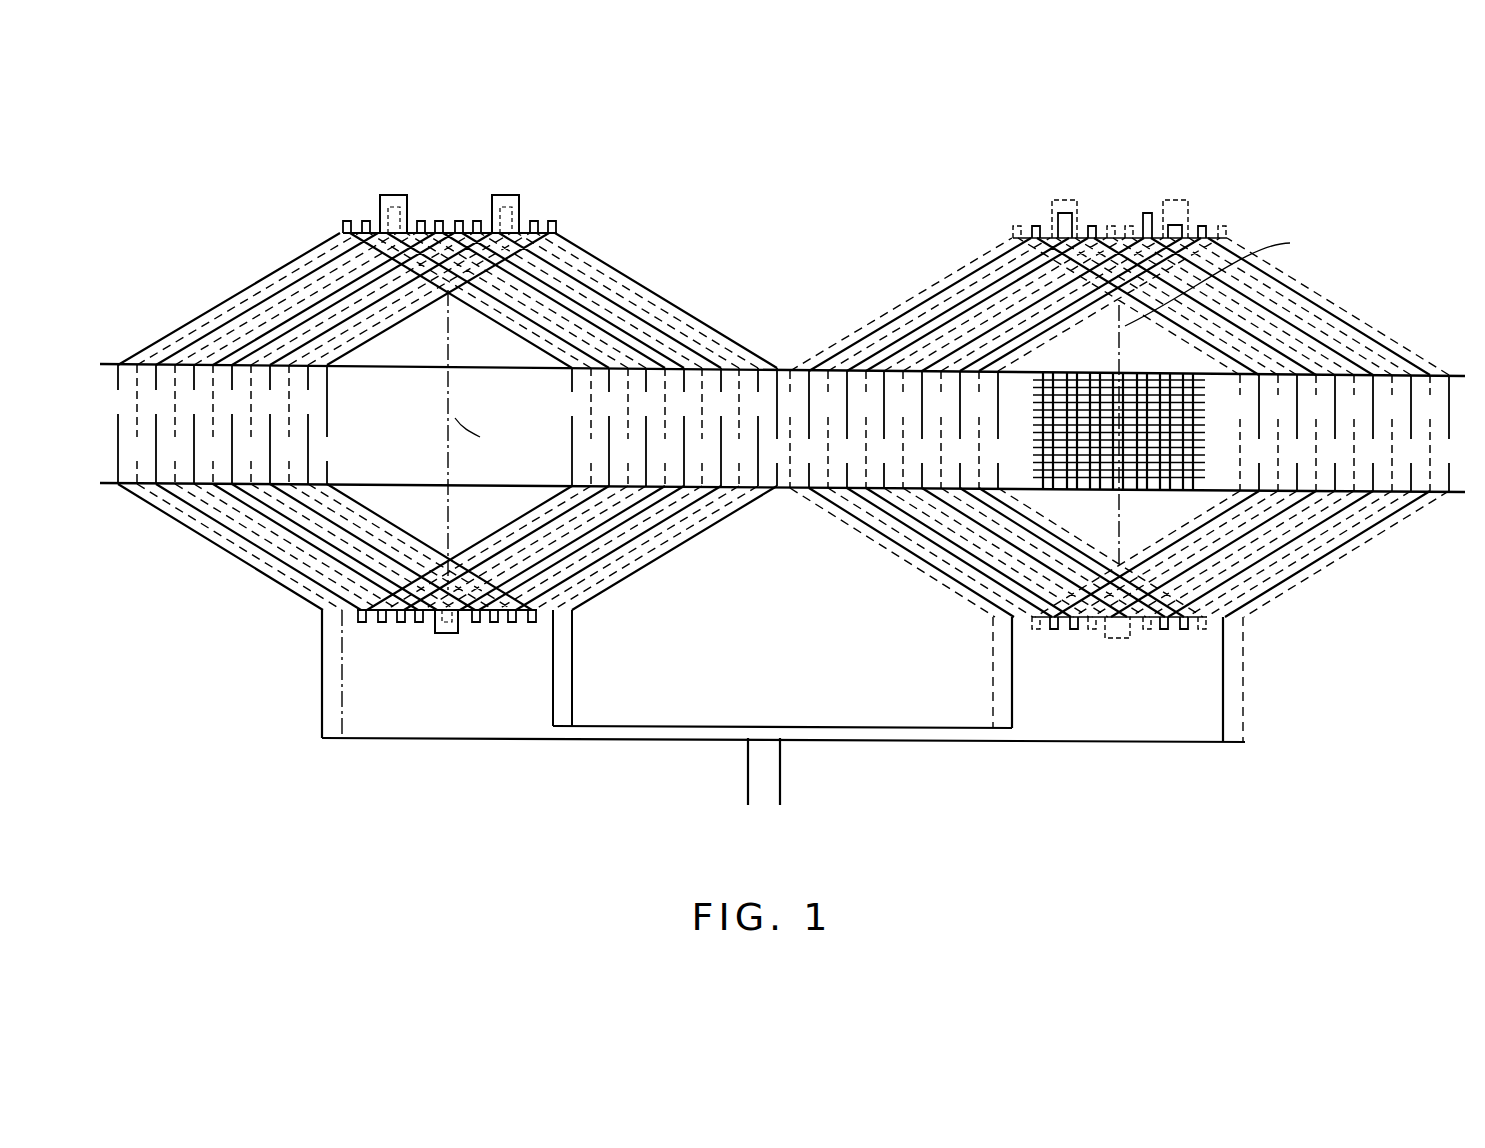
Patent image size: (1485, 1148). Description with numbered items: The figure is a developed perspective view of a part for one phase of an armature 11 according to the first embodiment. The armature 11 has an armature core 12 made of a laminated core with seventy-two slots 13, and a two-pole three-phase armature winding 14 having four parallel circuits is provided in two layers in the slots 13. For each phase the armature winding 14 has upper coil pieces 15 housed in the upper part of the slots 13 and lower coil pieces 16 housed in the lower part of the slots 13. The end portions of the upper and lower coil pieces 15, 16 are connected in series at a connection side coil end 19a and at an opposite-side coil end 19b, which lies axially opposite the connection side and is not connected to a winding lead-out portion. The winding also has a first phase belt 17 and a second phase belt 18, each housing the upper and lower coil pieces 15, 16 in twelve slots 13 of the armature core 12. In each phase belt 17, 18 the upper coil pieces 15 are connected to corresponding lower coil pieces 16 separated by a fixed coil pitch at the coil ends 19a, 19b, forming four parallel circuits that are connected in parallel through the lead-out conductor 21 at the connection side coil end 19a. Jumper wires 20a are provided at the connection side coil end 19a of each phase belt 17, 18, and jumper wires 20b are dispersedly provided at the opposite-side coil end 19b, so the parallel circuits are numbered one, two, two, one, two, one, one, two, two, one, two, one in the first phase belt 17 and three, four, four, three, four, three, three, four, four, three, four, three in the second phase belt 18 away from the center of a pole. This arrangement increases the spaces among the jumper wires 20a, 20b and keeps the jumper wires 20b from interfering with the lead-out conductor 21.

The armature 11 is at (799, 202).
The armature core 12 is at (1153, 443).
The slots 13 is at (1142, 486).
The armature winding 14 is at (1370, 612).
The upper coil pieces 15 is at (226, 362).
The lower coil pieces 16 is at (668, 366).
The first phase belt 17 is at (313, 259).
The second phase belt 18 is at (931, 291).
The connection side coil end 19a is at (279, 485).
The opposite-side coil end 19b is at (1389, 378).
The jumper wires 20a is at (446, 634).
The jumper wires 20b is at (506, 208).
The lead-out conductor 21 is at (865, 744).